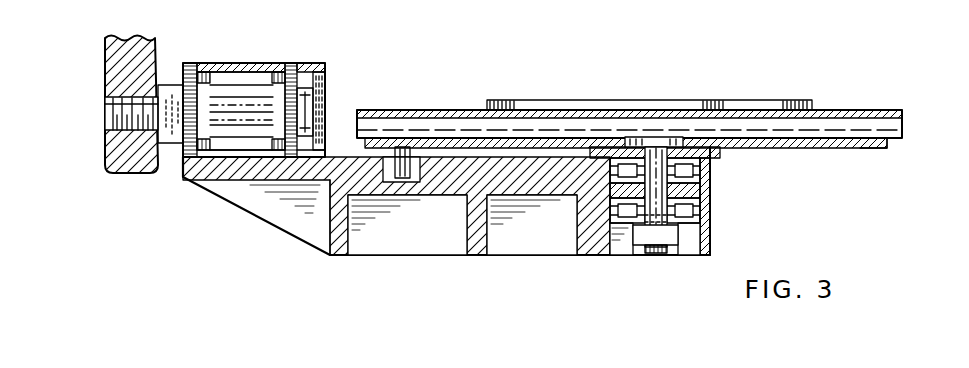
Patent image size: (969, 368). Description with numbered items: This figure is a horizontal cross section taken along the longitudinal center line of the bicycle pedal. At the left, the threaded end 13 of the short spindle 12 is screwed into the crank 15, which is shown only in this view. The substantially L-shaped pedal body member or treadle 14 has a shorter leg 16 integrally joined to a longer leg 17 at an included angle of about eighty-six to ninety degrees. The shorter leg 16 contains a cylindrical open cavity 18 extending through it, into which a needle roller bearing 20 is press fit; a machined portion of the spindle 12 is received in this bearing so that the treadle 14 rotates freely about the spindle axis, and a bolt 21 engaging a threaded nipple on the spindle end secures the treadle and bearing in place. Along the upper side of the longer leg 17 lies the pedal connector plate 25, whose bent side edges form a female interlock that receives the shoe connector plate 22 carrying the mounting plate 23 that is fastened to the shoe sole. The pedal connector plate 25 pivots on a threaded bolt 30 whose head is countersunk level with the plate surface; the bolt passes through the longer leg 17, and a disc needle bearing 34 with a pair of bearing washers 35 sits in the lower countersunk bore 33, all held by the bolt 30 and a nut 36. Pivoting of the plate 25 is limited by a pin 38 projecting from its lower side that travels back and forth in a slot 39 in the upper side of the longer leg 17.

The spindle 12 is at (233, 100).
The threaded end of the spindle 13 is at (110, 108).
The L-shaped pedal body member or treadle 14 is at (283, 242).
The crank 15 is at (120, 66).
The shorter leg 16 is at (268, 63).
The longer leg 17 is at (450, 258).
The open cavity 18 is at (200, 75).
The needle roller bearing 20 is at (222, 150).
The bolt 21 is at (318, 118).
The shoe connector plate 22 is at (325, 108).
The mounting plate 23 is at (552, 103).
The pedal connector plate 25 is at (865, 147).
The threaded bolt 30 is at (655, 138).
The countersunk bore 33 is at (700, 247).
The disc needle bearing 34 is at (610, 183).
The bearing washers 35 is at (705, 222).
The nut 36 is at (632, 240).
The pin 38 is at (400, 165).
The slot 39 is at (390, 160).